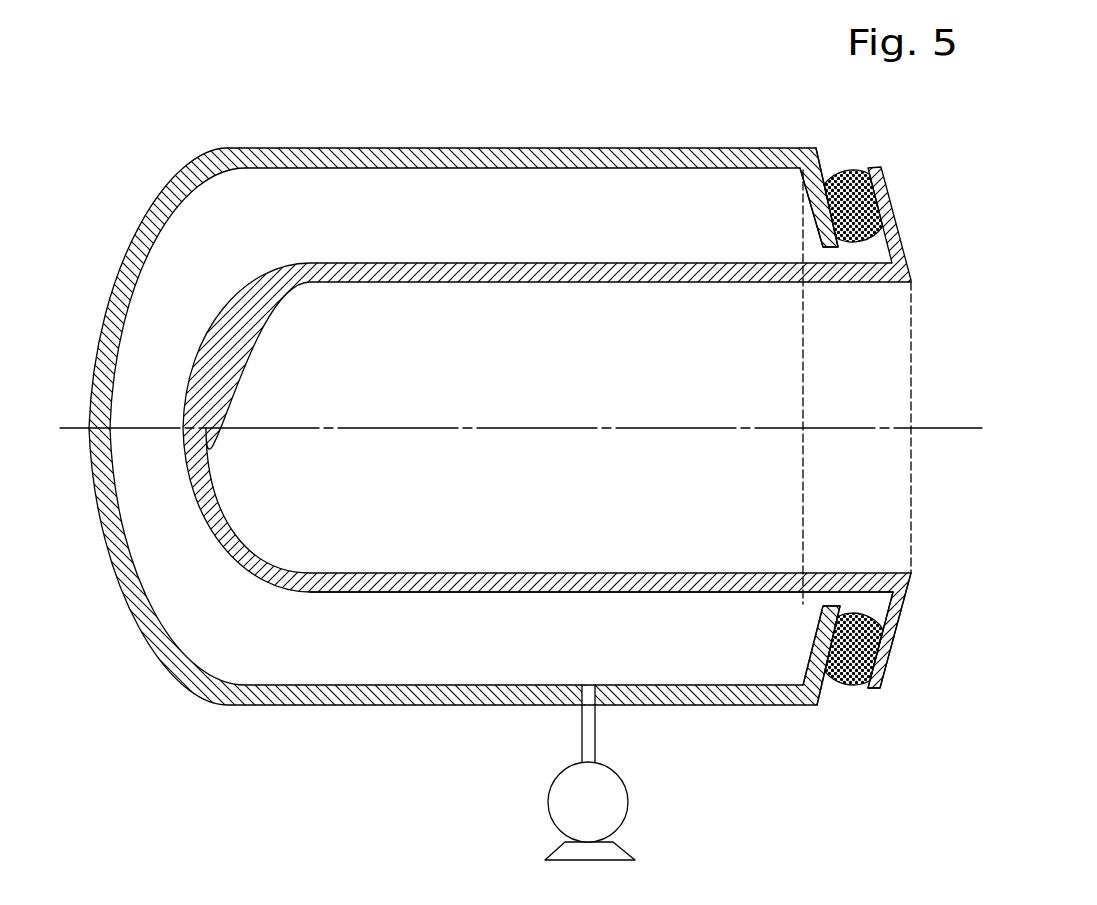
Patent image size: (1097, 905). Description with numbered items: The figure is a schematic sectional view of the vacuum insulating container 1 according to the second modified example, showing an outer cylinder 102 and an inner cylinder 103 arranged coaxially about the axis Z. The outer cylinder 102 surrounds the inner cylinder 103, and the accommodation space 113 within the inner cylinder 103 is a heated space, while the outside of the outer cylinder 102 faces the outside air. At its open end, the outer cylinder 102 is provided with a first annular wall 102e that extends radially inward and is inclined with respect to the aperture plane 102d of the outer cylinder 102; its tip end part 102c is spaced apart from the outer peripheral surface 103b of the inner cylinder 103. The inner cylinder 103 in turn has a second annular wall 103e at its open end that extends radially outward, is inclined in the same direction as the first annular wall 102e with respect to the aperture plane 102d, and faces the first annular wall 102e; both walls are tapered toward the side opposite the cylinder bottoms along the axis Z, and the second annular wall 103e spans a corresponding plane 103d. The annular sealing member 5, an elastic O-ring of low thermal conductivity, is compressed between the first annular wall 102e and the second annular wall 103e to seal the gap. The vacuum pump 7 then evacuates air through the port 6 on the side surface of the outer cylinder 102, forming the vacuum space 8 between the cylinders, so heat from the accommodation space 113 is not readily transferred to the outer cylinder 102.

The vacuum insulating container 1 is at (530, 91).
The sealing member 5 is at (858, 650).
The port 6 is at (590, 740).
The vacuum pump 7 is at (555, 823).
The vacuum space 8 is at (617, 618).
The outer cylinder 102 is at (447, 706).
The tip end part 102c is at (838, 592).
The aperture plane 102d is at (803, 477).
The first annular wall 102e is at (815, 641).
The inner cylinder 103 is at (523, 573).
The outer peripheral surface 103b is at (472, 594).
The inner tube flange distance 103d is at (911, 528).
The second annular wall 103e is at (895, 640).
The accommodation space 113 is at (752, 355).
The axis Z is at (970, 427).